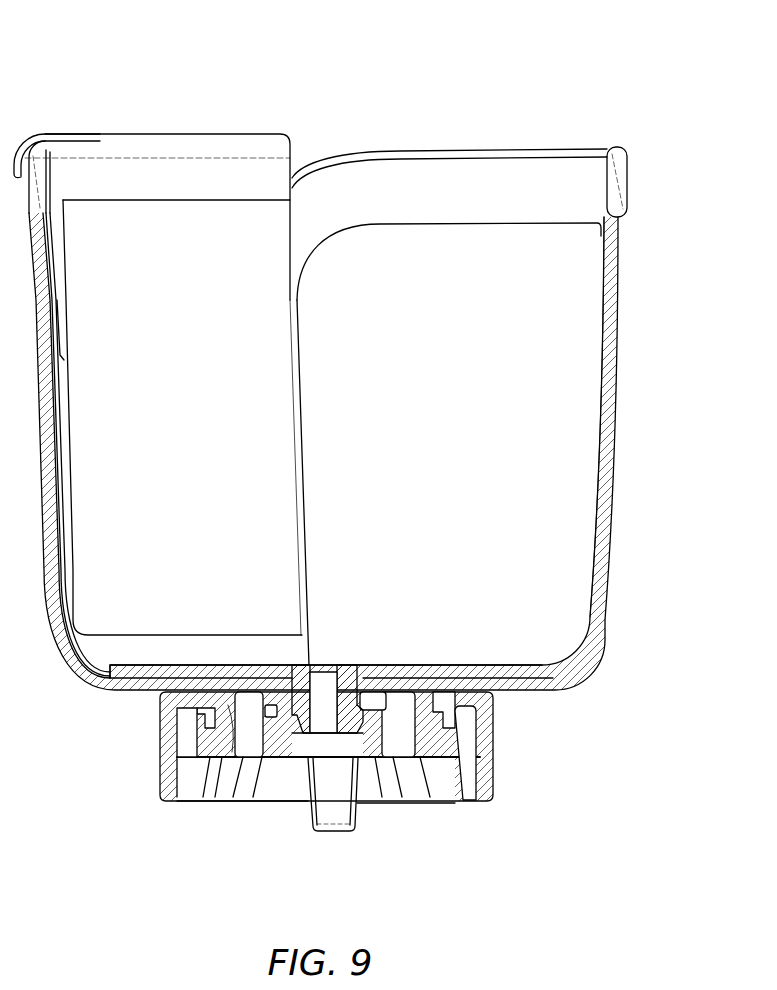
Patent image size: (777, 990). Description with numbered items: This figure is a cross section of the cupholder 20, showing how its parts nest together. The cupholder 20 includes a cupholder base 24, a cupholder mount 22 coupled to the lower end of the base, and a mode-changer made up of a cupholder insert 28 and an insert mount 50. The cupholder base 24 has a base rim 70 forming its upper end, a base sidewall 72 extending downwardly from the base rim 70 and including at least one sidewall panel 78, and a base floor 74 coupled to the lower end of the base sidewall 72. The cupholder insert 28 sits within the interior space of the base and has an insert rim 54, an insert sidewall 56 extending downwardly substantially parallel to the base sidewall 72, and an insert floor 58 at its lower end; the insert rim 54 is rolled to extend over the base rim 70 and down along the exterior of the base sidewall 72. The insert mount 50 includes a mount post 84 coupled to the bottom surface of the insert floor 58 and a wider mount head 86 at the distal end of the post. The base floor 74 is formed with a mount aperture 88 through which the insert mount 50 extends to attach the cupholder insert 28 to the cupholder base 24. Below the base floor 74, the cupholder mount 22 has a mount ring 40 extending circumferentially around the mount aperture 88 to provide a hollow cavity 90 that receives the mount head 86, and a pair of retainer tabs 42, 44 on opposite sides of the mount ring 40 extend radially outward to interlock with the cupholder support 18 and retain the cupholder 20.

The cupholder support 18 is at (488, 782).
The cupholder 20 is at (654, 123).
The cupholder mount 22 is at (209, 707).
The cupholder base 24 is at (635, 274).
The cupholder insert 28 is at (86, 128).
The mount ring 40 is at (212, 800).
The retainer tab 42 is at (438, 738).
The retainer tab 44 is at (204, 743).
The insert mount 50 is at (369, 748).
The insert rim 54 is at (181, 133).
The insert sidewall 56 is at (248, 268).
The insert floor 58 is at (143, 677).
The base rim 70 is at (396, 150).
The base sidewall 72 is at (500, 258).
The base floor 74 is at (527, 683).
The sidewall panel 78 is at (606, 431).
The mount post 84 is at (349, 697).
The mount head 86 is at (297, 737).
The mount aperture 88 is at (290, 672).
The hollow cavity 90 is at (330, 766).